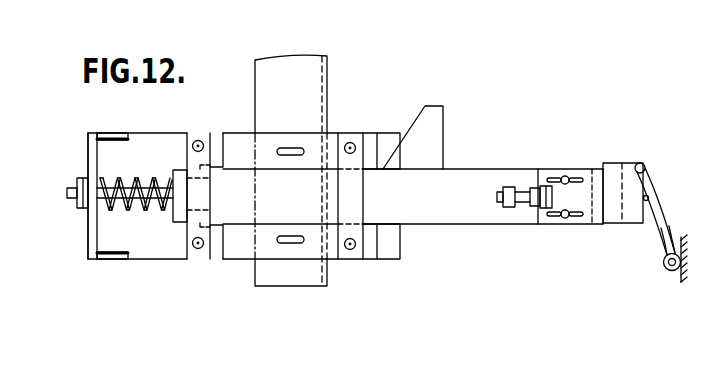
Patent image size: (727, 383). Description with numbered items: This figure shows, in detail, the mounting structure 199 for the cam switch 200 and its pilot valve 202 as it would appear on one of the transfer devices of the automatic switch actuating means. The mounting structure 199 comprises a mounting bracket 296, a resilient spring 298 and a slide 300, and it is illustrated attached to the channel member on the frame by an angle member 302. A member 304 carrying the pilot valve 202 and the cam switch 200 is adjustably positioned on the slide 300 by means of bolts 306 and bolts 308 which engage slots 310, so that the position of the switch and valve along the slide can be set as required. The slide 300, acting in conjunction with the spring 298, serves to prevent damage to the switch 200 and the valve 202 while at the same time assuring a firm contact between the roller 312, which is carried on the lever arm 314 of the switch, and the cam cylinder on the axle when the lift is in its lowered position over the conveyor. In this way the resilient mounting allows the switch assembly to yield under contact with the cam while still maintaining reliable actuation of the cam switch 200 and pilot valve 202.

The mounting structure 199 is at (80, 140).
The mounting bracket 296 is at (168, 260).
The resilient spring 298 is at (136, 182).
The angle member 302 is at (328, 101).
The slide 300 is at (462, 225).
The member 304 is at (582, 170).
The bolts 306 is at (523, 205).
The bolts 308 is at (562, 178).
The slots 310 is at (553, 220).
The pilot valve 202 is at (615, 224).
The cam switch 200 is at (647, 199).
The lever arm 314 is at (668, 238).
The roller 312 is at (667, 273).